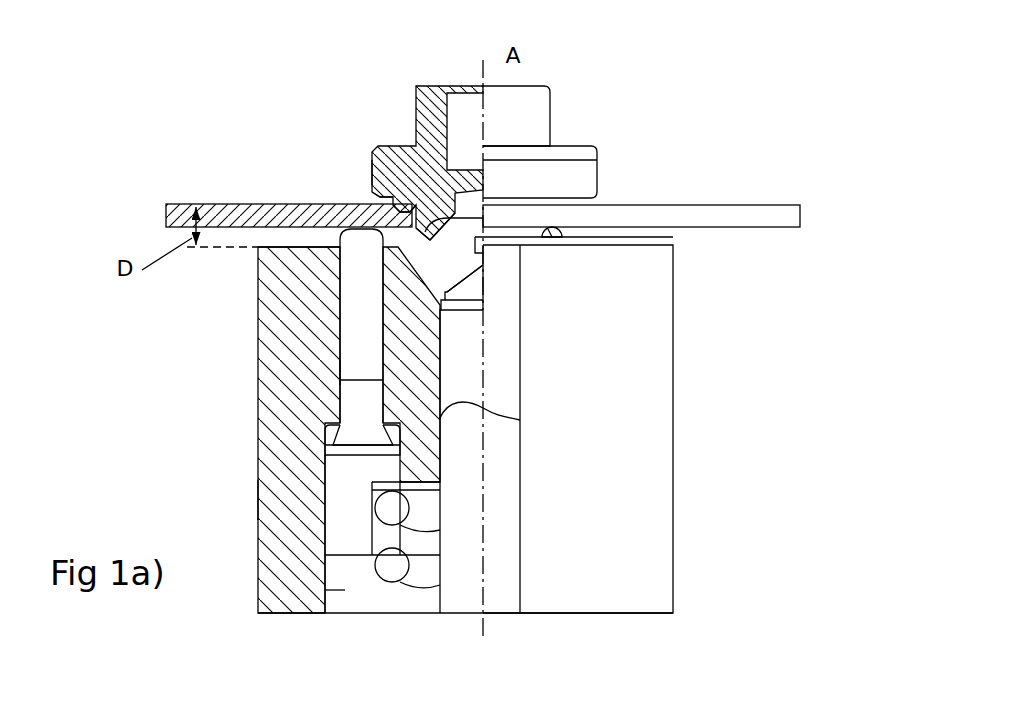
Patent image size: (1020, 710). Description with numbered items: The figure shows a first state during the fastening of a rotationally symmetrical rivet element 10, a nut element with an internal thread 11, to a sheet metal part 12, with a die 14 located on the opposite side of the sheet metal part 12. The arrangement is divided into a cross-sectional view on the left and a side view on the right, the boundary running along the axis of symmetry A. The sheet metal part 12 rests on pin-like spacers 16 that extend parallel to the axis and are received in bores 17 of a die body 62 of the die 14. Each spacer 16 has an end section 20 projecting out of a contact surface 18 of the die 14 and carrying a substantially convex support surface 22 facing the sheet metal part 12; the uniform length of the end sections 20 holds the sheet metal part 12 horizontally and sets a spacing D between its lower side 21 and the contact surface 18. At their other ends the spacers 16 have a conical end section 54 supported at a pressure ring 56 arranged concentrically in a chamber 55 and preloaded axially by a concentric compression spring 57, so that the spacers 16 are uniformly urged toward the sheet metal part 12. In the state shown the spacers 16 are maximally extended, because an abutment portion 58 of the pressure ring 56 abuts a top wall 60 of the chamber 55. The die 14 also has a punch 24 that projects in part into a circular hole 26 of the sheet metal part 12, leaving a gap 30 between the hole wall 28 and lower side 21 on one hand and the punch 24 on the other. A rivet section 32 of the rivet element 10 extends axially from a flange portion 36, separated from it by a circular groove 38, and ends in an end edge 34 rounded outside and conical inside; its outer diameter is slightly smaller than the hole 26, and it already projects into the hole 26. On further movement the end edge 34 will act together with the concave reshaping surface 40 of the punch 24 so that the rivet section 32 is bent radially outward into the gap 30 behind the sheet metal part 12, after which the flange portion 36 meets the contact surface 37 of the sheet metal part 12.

The rivet element 10 is at (602, 100).
The internal thread 11 is at (457, 105).
The sheet metal part 12 is at (795, 215).
The die 14 is at (648, 432).
The spacers 16 is at (562, 243).
The bores 17 is at (345, 383).
The contact surface 18 is at (275, 266).
The end section 20 is at (300, 270).
The lower side 21 is at (190, 237).
The support surface 22 is at (357, 321).
The punch 24 is at (447, 238).
The circular hole 26 is at (472, 205).
The wall 28 is at (380, 226).
The gap 30 is at (355, 372).
The rivet section 32 is at (427, 238).
The end edge 34 is at (436, 232).
The flange portion 36 is at (385, 162).
The contact surface 37 is at (403, 195).
The groove 38 is at (400, 212).
The reshaping surface 40 is at (432, 248).
The conical end section 54 is at (355, 438).
The chamber 55 is at (345, 592).
The pressure ring 56 is at (338, 528).
The compression spring 57 is at (422, 570).
The abutment portion 58 is at (420, 432).
The top wall 60 is at (458, 403).
The die body 62 is at (280, 498).